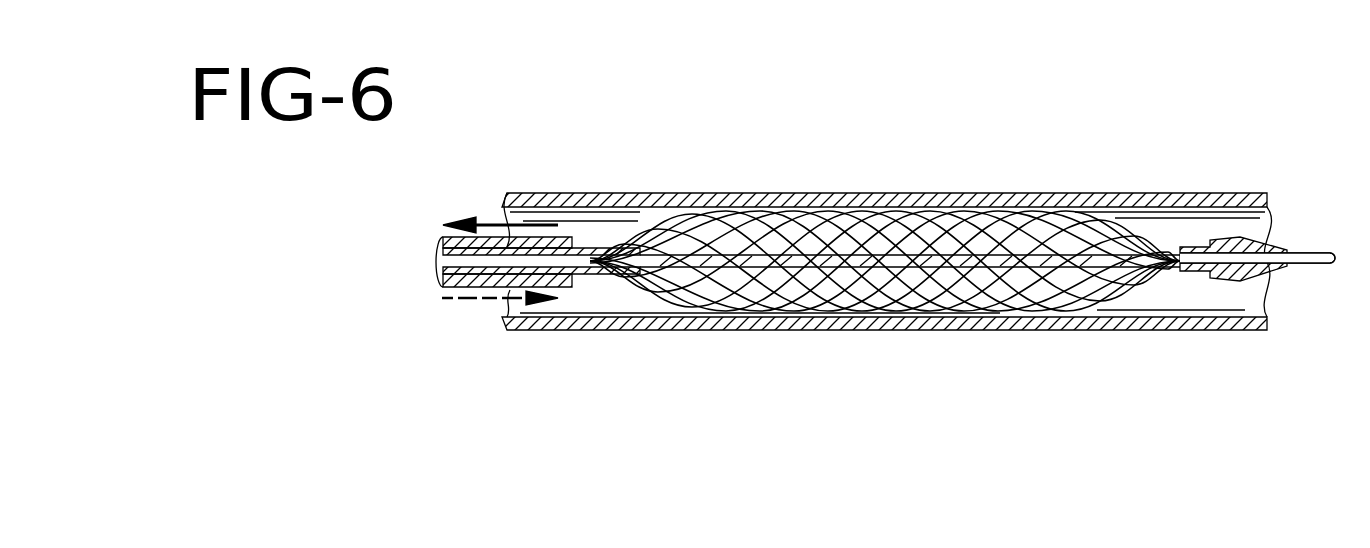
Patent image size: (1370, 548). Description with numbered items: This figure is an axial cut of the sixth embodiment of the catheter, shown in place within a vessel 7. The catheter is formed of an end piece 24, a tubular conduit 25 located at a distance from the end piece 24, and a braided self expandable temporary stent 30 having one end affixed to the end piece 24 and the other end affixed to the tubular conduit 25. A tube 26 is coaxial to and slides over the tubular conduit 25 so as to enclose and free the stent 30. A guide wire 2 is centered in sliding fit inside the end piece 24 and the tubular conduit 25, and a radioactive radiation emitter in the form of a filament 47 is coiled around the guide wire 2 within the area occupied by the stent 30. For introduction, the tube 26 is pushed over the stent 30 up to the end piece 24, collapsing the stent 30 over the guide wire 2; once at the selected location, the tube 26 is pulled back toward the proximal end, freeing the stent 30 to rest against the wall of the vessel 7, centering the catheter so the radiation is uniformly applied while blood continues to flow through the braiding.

The vessel 7 is at (1138, 200).
The braided self expandable temporary stent 30 is at (832, 245).
The guide wire 2 is at (1030, 262).
The filament 47 is at (927, 258).
The end piece 24 is at (1243, 280).
The tubular conduit 25 is at (585, 277).
The tube 26 is at (480, 290).